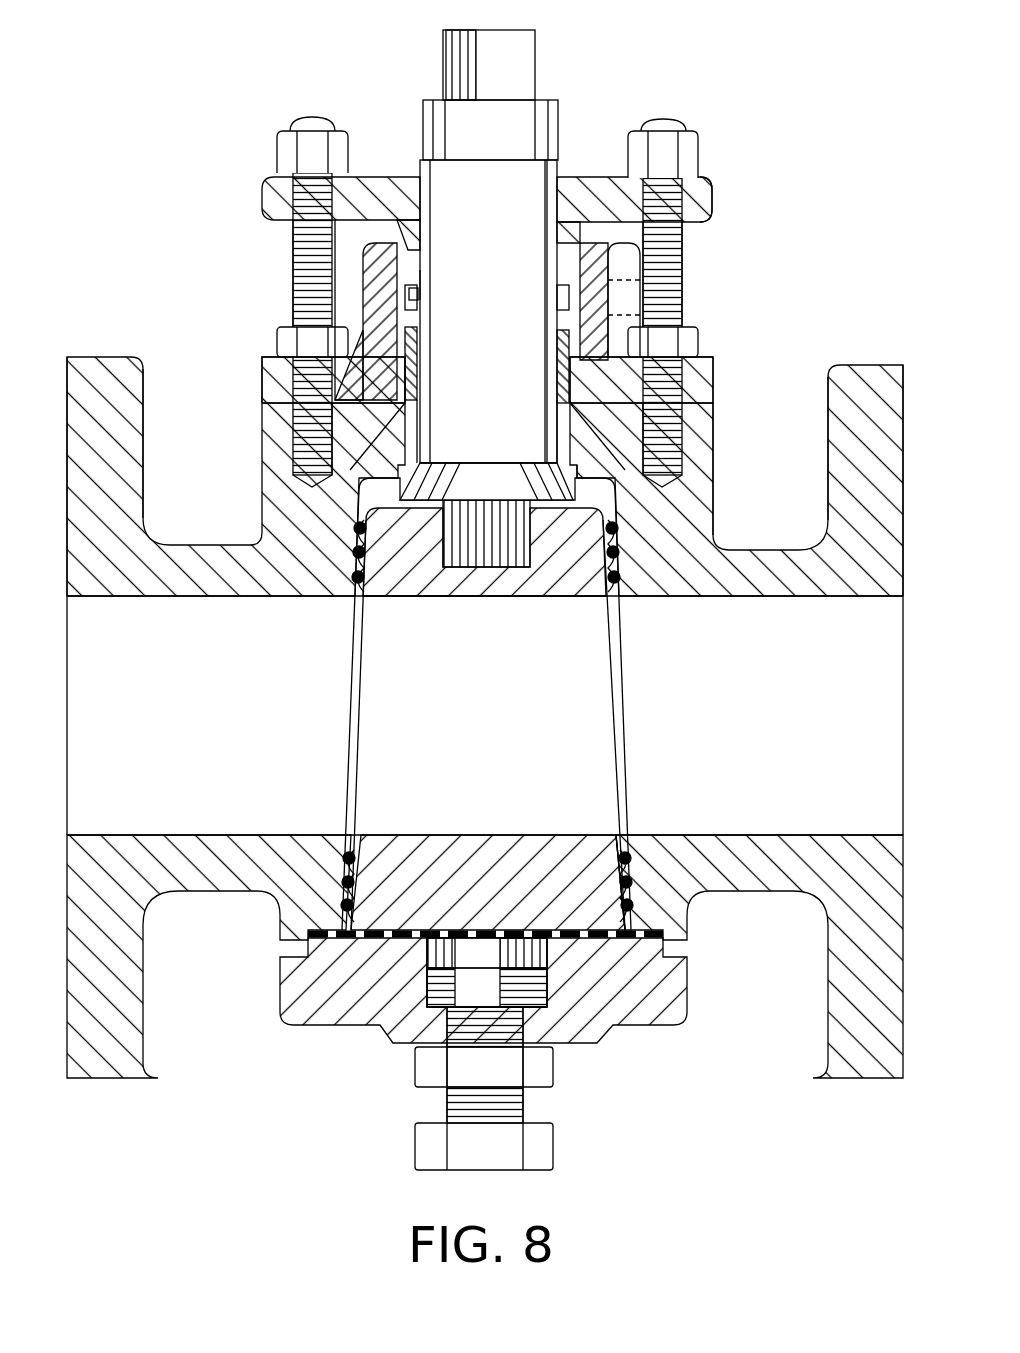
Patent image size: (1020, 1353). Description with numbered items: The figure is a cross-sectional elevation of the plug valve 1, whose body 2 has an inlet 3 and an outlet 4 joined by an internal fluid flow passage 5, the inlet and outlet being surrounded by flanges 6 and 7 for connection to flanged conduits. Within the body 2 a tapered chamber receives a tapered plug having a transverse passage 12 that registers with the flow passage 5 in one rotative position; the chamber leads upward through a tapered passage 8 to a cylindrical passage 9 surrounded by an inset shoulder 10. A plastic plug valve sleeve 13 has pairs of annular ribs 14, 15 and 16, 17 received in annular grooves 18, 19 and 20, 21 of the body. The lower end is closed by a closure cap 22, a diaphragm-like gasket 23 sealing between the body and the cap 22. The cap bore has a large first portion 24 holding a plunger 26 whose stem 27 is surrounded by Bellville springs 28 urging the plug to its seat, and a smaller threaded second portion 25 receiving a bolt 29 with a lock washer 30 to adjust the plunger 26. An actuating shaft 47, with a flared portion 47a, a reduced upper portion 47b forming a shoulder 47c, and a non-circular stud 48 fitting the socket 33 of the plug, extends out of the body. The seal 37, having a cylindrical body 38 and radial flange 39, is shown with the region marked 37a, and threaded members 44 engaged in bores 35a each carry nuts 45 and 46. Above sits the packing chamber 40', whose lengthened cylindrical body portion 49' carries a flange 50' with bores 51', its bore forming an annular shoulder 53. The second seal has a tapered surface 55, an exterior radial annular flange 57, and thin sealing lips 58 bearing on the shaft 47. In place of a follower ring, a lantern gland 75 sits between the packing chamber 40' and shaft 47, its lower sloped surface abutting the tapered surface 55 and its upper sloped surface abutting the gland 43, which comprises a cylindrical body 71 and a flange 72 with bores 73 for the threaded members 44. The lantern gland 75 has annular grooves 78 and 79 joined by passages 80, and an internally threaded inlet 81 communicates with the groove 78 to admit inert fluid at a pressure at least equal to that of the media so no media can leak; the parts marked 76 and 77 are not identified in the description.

The plug valve 1 is at (230, 894).
The body 2 is at (176, 891).
The inlet 3 is at (98, 597).
The outlet 4 is at (878, 597).
The internal fluid flow passage 5 is at (782, 775).
The flange 6 is at (118, 362).
The flange 7 is at (868, 375).
The tapered passage 8 is at (395, 468).
The cylindrical passage 9 is at (398, 424).
The inset shoulder 10 is at (588, 412).
The transverse passage 12 is at (555, 590).
The plug valve sleeve 13 is at (640, 900).
The annular rib 14 is at (348, 600).
The annular rib 15 is at (358, 600).
The annular rib 16 is at (350, 858).
The annular rib 17 is at (341, 858).
The annular groove 18 is at (628, 560).
The annular groove 19 is at (620, 600).
The annular groove 20 is at (627, 858).
The annular groove 21 is at (632, 852).
The closure cap 22 is at (688, 995).
The diaphragm-like gasket 23 is at (645, 940).
The first bore portion 24 is at (548, 965).
The second threaded bore portion 25 is at (525, 1020).
The plunger 26 is at (490, 968).
The stem 27 is at (486, 1001).
The Bellville springs 28 is at (437, 988).
The bolt 29 is at (428, 1146).
The lock washer 30 is at (430, 1068).
The socket 33 is at (486, 578).
The bores 35a is at (300, 445).
The seal 37 is at (426, 408).
The stem flange 37a is at (422, 480).
The cylindrical body 38 is at (548, 410).
The radial flange 39 is at (578, 478).
The packing chamber 40' is at (755, 449).
The gland 43 is at (712, 199).
The threaded members 44 is at (300, 272).
The nut 45 is at (290, 338).
The nut 46 is at (290, 148).
The actuating shaft 47 is at (560, 176).
The flared portion 47a is at (560, 480).
The upper portion of reduced diameter 47b is at (540, 100).
The shoulder 47c is at (422, 165).
The non-circular stud 48 is at (521, 555).
The cylindrical body portion 49' is at (353, 310).
The nut 50' is at (701, 334).
The gland ring 51' is at (481, 374).
The annular shoulder 53 is at (388, 396).
The tapered surface 55 is at (600, 320).
The exterior radial annular flange 57 is at (572, 392).
The sealing lips 58 is at (546, 372).
The cylindrical body 71 is at (626, 262).
The flange 72 is at (700, 185).
The bores 73 is at (300, 236).
The lantern gland 75 is at (436, 286).
The plate lug 76 is at (418, 262).
The packing 77 is at (418, 340).
The annular groove 78 is at (380, 300).
The annular groove 79 is at (420, 292).
The passages 80 is at (414, 300).
The inlet 81 is at (665, 318).